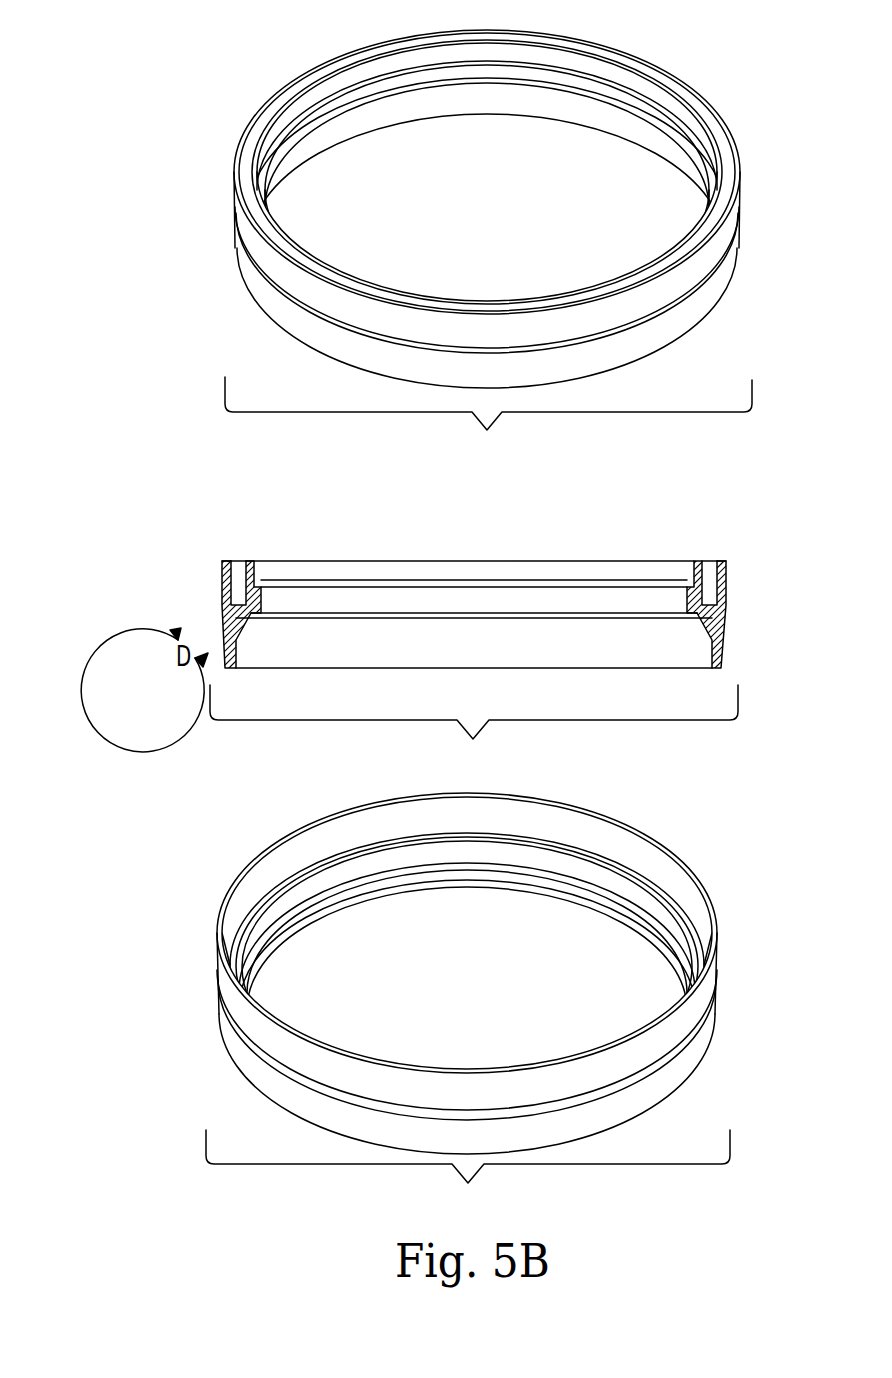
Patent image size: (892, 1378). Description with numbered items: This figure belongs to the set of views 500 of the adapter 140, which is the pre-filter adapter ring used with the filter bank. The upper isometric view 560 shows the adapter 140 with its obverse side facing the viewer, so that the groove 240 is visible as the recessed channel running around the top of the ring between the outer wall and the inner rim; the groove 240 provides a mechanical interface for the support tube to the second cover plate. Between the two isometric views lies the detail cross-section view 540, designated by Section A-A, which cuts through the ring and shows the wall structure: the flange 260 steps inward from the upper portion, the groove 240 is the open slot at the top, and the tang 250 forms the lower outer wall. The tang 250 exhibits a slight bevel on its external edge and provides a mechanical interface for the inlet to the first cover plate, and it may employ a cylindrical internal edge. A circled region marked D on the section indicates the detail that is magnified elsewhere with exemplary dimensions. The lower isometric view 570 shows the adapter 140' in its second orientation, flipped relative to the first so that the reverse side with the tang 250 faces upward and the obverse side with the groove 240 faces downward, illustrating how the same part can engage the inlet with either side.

The views 500 is at (108, 62).
The adapter 140 is at (524, 209).
The adapter 140' is at (513, 973).
The groove 240 is at (261, 51).
The tang 250 is at (723, 648).
The flange 260 is at (695, 573).
The detail cross-section view 540 is at (427, 668).
The perspective view of ring 560 is at (488, 421).
The perspective view of alternate ring 570 is at (468, 1175).